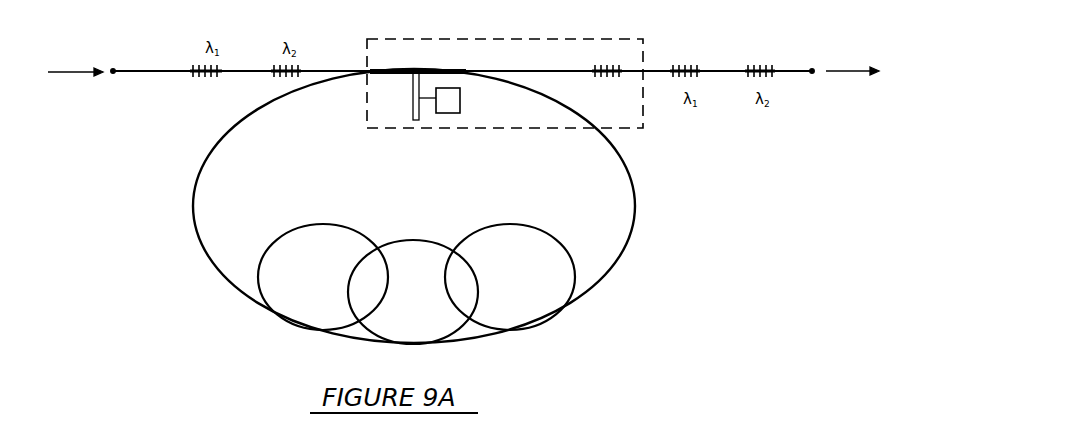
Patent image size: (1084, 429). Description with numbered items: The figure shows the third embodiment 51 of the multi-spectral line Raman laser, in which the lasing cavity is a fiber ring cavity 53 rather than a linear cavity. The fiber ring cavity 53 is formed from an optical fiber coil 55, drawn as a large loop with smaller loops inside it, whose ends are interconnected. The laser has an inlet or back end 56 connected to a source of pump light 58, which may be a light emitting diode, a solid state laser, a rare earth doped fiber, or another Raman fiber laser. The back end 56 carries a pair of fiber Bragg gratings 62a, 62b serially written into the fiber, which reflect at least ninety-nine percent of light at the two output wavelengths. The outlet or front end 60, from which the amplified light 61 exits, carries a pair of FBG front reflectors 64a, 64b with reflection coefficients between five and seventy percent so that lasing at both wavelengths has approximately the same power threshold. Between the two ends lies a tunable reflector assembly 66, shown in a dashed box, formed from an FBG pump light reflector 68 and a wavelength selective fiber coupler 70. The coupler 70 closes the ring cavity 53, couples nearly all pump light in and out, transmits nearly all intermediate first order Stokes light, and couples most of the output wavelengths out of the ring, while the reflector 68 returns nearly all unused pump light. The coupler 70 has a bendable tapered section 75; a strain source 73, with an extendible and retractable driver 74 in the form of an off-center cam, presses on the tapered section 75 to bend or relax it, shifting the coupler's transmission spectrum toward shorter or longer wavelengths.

The third embodiment of the multi-spectral line Raman laser 51 is at (111, 30).
The fiber ring cavity 53 is at (428, 194).
The optical fiber coil 55 is at (262, 307).
The inlet or back end 56 is at (120, 74).
The pump light source 58 is at (63, 76).
The outlet or front end 60 is at (812, 76).
The amplified light 61 is at (850, 75).
The FBG back reflector 62a is at (191, 68).
The FBG back reflector 62b is at (306, 68).
The FBG front reflector 64a is at (675, 68).
The FBG front reflector 64b is at (747, 68).
The tunable reflector assembly 66 is at (484, 34).
The FBG pump light reflector 68 is at (617, 75).
The wavelength selective fiber coupler 70 is at (442, 68).
The strain source 73 is at (466, 101).
The extendible and retractable driver 74 is at (413, 90).
The tapered section of coupler 75 is at (415, 68).